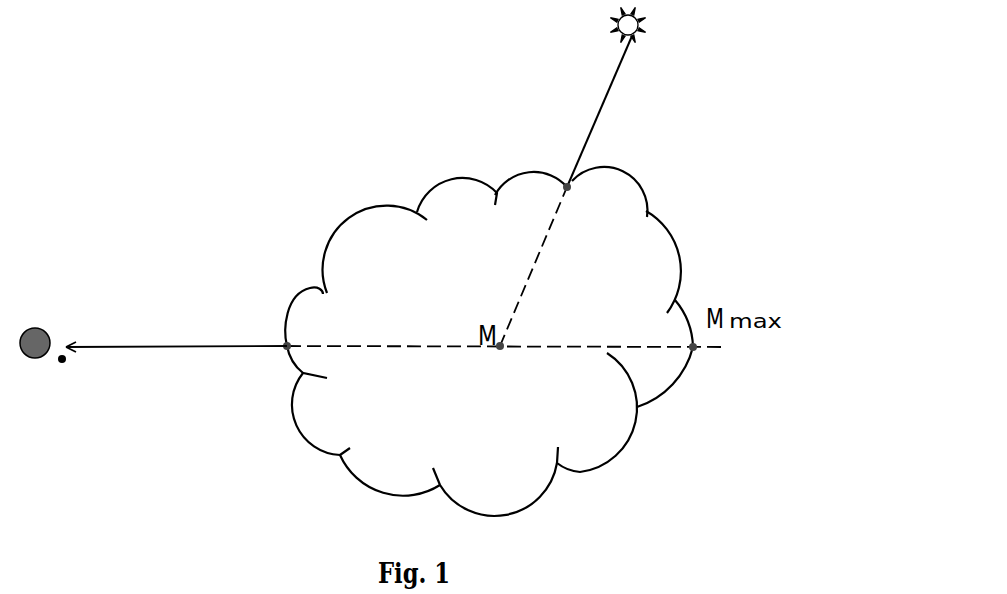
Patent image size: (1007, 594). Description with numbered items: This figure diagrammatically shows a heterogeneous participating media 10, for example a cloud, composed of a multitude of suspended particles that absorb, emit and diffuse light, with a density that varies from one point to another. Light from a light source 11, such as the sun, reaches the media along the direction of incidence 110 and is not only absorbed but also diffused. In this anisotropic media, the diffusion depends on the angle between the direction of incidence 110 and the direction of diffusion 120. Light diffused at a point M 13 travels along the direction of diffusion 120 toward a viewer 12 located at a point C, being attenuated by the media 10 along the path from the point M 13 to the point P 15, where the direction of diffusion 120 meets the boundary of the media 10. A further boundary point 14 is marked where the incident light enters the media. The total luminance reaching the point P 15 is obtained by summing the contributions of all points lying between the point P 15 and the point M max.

The heterogeneous participating media 10 is at (643, 408).
The light source 11 is at (618, 32).
The viewer 12 is at (42, 355).
The point M 13 is at (500, 346).
The point on boundary toward sun 14 is at (570, 189).
The point P 15 is at (287, 346).
The direction of incidence ωin 110 is at (585, 142).
The direction of diffusion ωout 120 is at (167, 347).